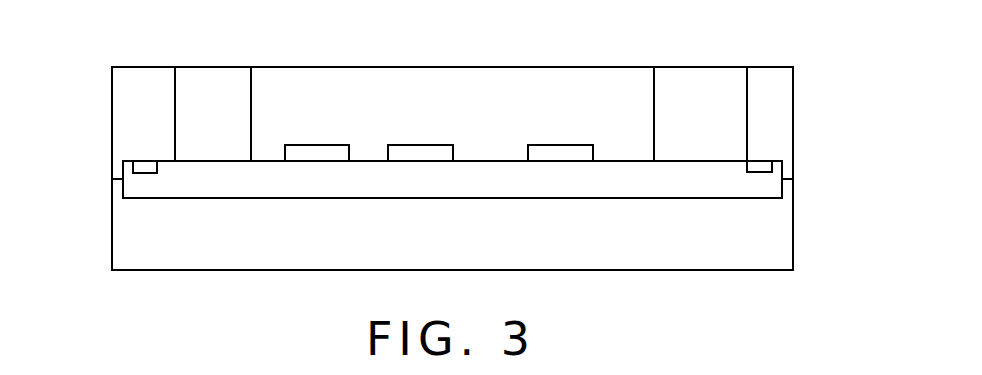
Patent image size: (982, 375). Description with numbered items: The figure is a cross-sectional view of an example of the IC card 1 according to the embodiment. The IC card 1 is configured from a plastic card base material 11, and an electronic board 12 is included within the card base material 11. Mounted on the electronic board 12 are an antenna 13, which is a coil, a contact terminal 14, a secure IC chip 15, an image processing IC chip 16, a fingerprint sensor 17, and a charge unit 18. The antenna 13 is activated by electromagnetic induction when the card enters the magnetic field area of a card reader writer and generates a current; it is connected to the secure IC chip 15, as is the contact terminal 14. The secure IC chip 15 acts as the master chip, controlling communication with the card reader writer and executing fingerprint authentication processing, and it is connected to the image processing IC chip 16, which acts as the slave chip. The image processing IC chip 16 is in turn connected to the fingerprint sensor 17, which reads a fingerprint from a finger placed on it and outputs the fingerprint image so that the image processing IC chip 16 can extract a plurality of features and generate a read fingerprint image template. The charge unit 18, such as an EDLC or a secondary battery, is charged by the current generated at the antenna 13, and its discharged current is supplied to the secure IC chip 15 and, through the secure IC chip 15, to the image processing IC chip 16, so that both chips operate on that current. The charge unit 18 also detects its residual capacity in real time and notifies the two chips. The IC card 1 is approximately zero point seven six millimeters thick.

The IC card 1 is at (785, 114).
The card base material 11 is at (785, 245).
The electronic board 12 is at (775, 189).
The antenna 13 is at (137, 164).
The contact terminal 14 is at (215, 82).
The secure IC chip 15 is at (422, 153).
The image processing IC chip 16 is at (560, 153).
The fingerprint sensor 17 is at (702, 82).
The charge unit 18 is at (317, 153).